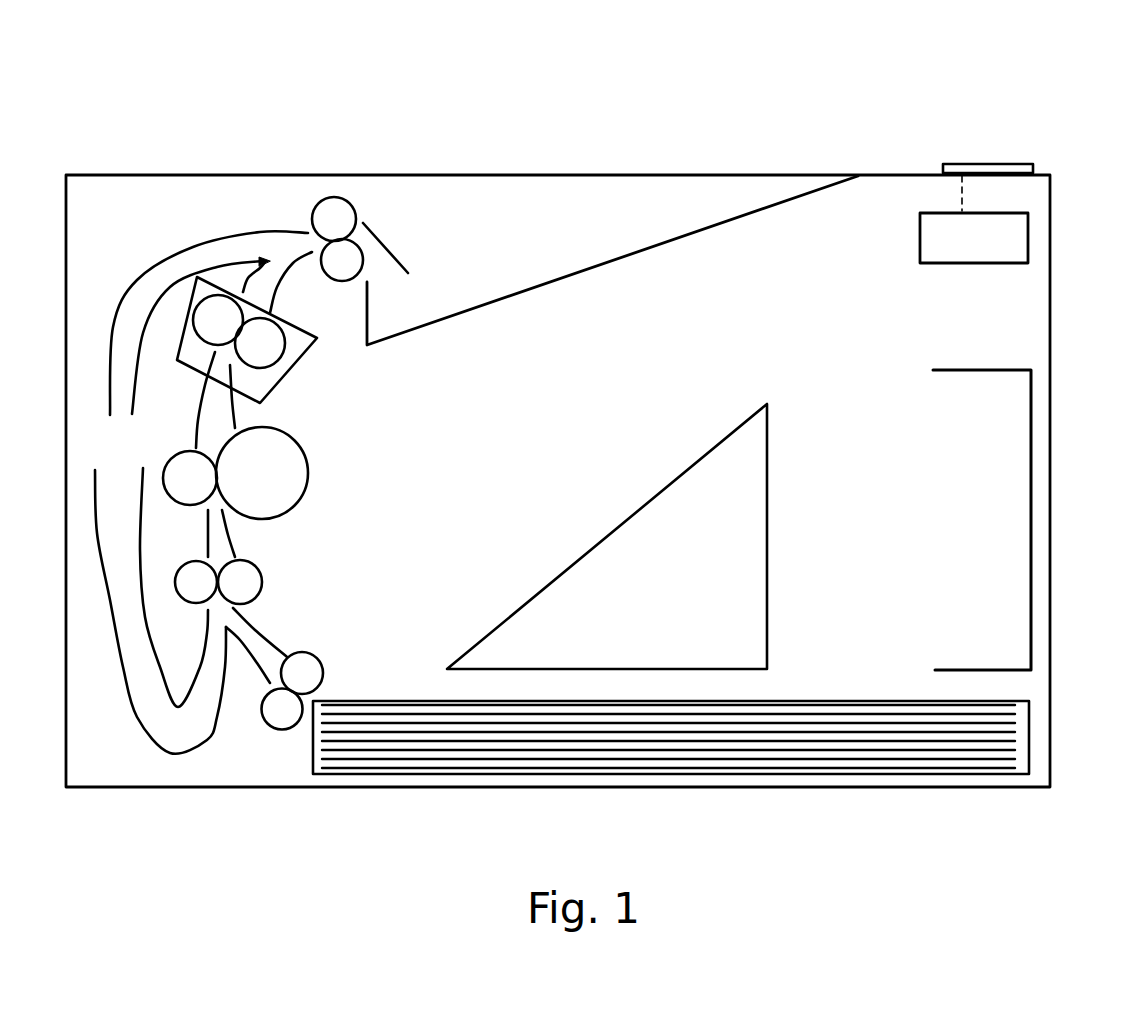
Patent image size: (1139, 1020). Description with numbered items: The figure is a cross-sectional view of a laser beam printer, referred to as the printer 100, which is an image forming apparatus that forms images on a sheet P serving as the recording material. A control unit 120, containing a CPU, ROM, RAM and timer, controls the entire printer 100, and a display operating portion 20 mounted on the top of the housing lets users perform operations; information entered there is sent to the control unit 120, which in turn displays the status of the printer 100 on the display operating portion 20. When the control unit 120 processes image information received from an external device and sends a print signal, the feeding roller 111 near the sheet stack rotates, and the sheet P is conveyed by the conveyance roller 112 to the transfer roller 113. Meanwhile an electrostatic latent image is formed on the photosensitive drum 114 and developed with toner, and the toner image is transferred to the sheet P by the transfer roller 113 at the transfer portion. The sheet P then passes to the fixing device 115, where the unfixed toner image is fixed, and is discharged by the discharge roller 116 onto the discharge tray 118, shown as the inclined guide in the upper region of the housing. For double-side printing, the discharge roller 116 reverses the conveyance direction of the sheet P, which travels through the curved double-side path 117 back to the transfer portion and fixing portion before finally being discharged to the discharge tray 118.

The printer 100 is at (204, 100).
The feeding roller 111 is at (298, 673).
The conveyance roller 112 is at (261, 568).
The transfer roller 113 is at (192, 483).
The photosensitive drum 114 is at (295, 472).
The fixing device 115 is at (268, 335).
The discharge roller 116 is at (340, 218).
The double-side path 117 is at (182, 265).
The discharge tray 118 is at (433, 320).
The control unit 120 is at (1029, 253).
The display operating portion 20 is at (980, 163).
The sheet P is at (400, 742).